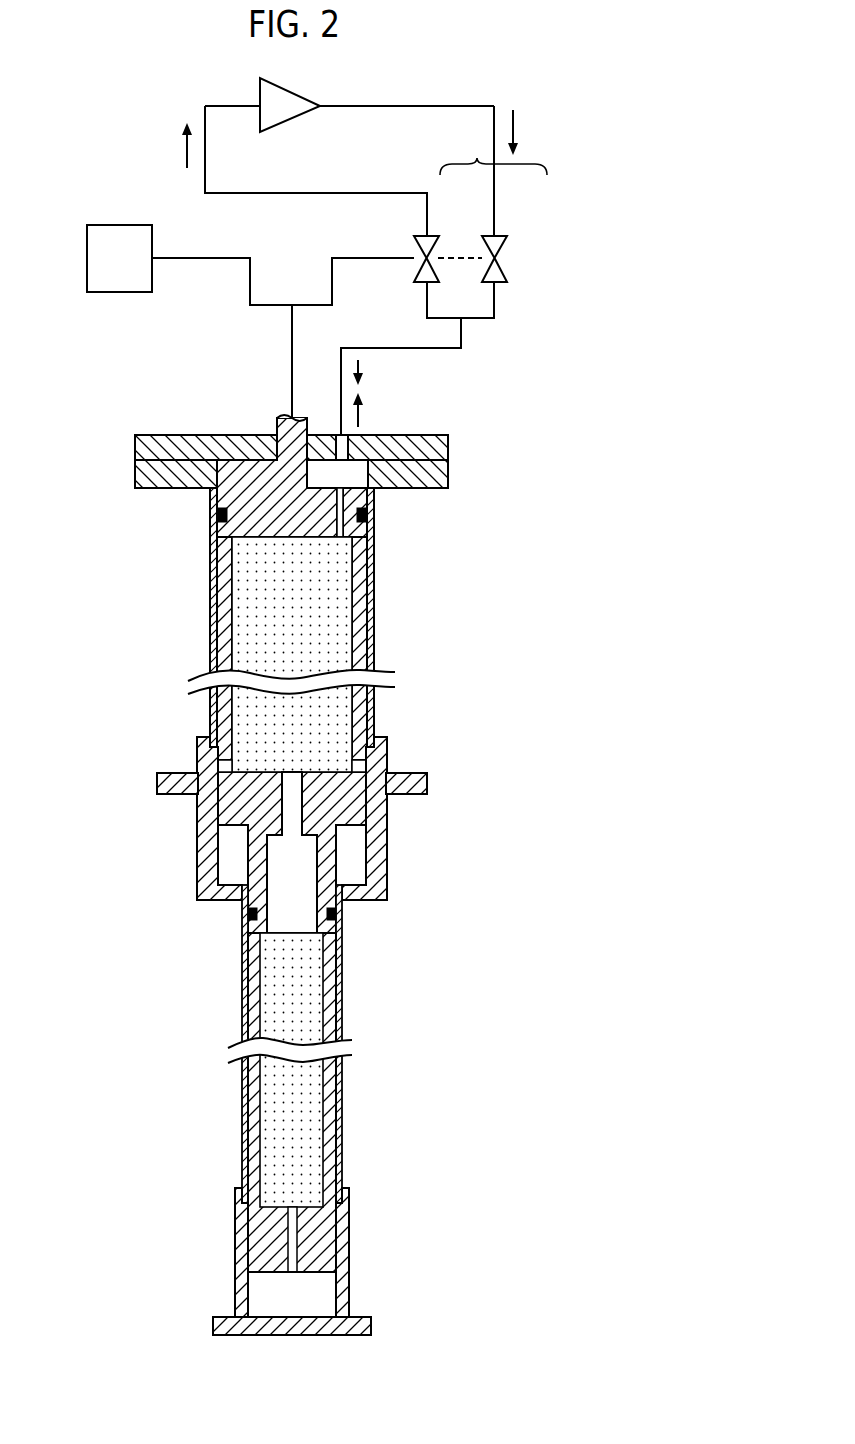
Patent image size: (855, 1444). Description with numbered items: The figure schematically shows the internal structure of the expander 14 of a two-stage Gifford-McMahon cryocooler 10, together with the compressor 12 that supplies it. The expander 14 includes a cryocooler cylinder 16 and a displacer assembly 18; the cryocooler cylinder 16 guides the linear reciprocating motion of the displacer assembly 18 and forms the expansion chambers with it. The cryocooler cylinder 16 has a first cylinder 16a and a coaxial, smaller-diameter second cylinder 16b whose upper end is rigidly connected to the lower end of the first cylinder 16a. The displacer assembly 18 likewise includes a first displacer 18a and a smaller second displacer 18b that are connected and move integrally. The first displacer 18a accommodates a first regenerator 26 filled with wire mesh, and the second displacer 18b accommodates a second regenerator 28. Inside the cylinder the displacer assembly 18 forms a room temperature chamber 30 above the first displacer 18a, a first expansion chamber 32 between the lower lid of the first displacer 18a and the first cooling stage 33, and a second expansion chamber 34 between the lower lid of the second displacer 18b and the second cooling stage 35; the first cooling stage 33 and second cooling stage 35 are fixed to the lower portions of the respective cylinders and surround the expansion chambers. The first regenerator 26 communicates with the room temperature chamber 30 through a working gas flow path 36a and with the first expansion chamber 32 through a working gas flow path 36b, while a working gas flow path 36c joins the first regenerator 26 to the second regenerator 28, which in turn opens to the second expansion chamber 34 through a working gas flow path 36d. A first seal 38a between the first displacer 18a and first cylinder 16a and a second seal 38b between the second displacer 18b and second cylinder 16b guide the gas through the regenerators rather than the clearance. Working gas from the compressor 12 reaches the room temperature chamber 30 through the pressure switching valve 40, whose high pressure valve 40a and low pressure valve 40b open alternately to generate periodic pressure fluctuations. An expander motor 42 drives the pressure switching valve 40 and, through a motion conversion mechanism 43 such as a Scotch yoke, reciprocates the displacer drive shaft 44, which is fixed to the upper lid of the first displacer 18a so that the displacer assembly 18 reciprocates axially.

The cryocooler 10 is at (309, 1378).
The compressor 12 is at (287, 83).
The expander 14 is at (120, 409).
The cryocooler cylinder 16 is at (220, 474).
The first cylinder 16a is at (211, 593).
The second cylinder 16b is at (244, 1127).
The displacer assembly 18 is at (260, 483).
The first displacer 18a is at (361, 598).
The second displacer 18b is at (327, 967).
The first regenerator 26 is at (318, 637).
The second regenerator 28 is at (298, 997).
The room temperature chamber 30 is at (338, 479).
The first expansion chamber 32 is at (350, 860).
The first cooling stage 33 is at (388, 749).
The second expansion chamber 34 is at (325, 1295).
The second cooling stage 35 is at (346, 1227).
The working gas flow path 36a is at (343, 527).
The working gas flow path 36b is at (358, 768).
The working gas flow path 36c is at (292, 778).
The working gas flow path 36d is at (290, 1242).
The first seal 38a is at (216, 512).
The second seal 38b is at (247, 917).
The pressure switching valve 40 is at (444, 281).
The high pressure valve 40a is at (502, 234).
The low pressure valve 40b is at (432, 234).
The expander motor 42 is at (122, 226).
The motion conversion mechanism 43 is at (272, 304).
The displacer drive shaft 44 is at (298, 470).